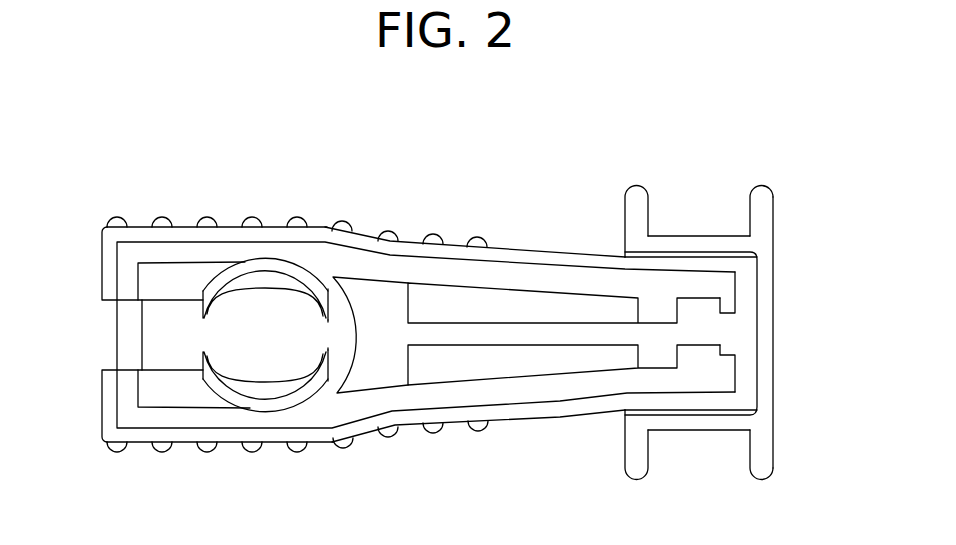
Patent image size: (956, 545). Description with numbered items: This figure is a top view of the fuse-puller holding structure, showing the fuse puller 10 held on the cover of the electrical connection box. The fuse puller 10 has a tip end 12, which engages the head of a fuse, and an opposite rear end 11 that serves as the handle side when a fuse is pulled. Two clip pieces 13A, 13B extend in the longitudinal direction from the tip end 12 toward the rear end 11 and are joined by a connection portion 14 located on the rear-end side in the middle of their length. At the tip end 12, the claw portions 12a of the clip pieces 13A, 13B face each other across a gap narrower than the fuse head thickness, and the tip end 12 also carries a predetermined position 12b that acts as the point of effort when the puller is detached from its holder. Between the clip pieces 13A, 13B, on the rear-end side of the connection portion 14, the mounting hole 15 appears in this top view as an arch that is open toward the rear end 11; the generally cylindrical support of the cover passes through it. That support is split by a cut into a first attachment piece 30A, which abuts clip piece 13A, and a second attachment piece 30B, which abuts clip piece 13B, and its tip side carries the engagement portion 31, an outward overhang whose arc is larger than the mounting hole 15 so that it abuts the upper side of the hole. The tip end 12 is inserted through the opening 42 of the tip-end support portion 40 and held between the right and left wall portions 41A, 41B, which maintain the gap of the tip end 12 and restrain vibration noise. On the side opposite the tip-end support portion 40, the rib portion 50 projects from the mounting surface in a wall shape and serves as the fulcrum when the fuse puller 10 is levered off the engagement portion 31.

The fuse puller 10 is at (368, 230).
The rear end 11 is at (188, 224).
The tip end 12 is at (562, 247).
The claw portions 12a is at (737, 303).
The predetermined position 12b is at (537, 246).
The clip piece 13A is at (101, 277).
The clip piece 13B is at (101, 397).
The connection portion 14 is at (343, 327).
The mounting hole 15 is at (325, 335).
The first attachment piece 30A is at (309, 296).
The second attachment piece 30B is at (310, 373).
The engagement portion 31 is at (248, 257).
The tip-end support portion 40 is at (775, 330).
The wall portion 41A is at (688, 236).
The wall portion 41B is at (688, 432).
The opening 42 is at (628, 257).
The rib portion 50 is at (116, 335).